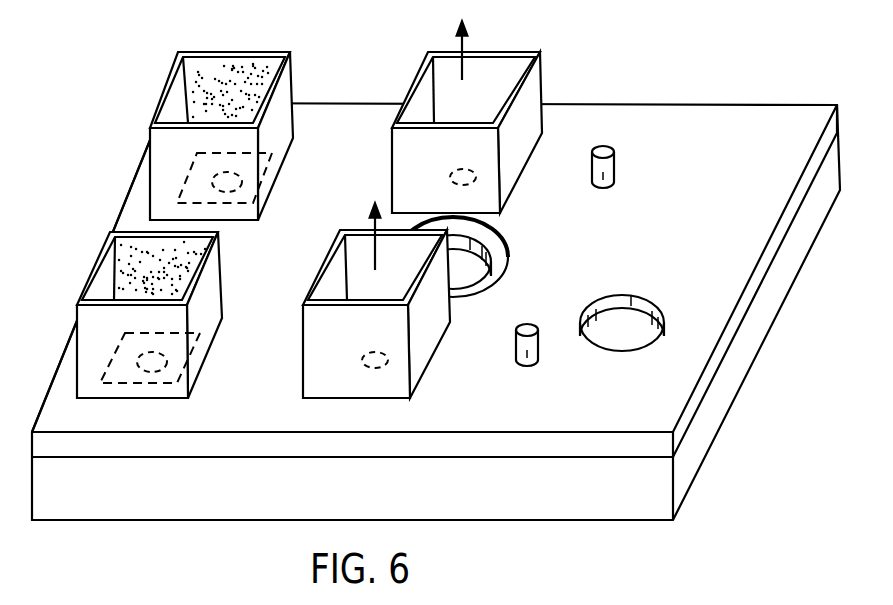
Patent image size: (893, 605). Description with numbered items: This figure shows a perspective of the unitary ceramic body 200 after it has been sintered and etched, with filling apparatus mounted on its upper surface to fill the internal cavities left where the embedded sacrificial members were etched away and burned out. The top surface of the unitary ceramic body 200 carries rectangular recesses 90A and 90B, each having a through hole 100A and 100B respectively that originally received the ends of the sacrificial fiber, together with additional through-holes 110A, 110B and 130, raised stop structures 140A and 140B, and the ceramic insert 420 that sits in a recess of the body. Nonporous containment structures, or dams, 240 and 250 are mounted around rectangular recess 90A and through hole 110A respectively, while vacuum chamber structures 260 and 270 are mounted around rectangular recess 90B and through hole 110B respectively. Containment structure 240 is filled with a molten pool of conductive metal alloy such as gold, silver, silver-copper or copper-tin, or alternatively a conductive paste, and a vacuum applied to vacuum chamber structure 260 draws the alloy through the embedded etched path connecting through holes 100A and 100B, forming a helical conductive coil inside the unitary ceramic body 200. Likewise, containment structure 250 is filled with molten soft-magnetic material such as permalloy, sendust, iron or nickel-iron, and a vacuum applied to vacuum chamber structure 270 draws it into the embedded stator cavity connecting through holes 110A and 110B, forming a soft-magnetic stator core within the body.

The unitary ceramic body 200 is at (712, 494).
The through-hole 130 is at (622, 293).
The raised stop structure 140A is at (615, 167).
The raised stop structure 140B is at (538, 342).
The green ceramic insert 420 is at (503, 253).
The nonporous containment structure 240 is at (295, 72).
The nonporous containment structure 250 is at (543, 75).
The vacuum chamber structure 260 is at (222, 272).
The vacuum chamber structure 270 is at (437, 333).
The through hole 100A is at (270, 157).
The through hole 100B is at (202, 344).
The recess 90A is at (256, 197).
The recess 90B is at (193, 383).
The through-hole 110A is at (478, 186).
The through-hole 110B is at (383, 366).